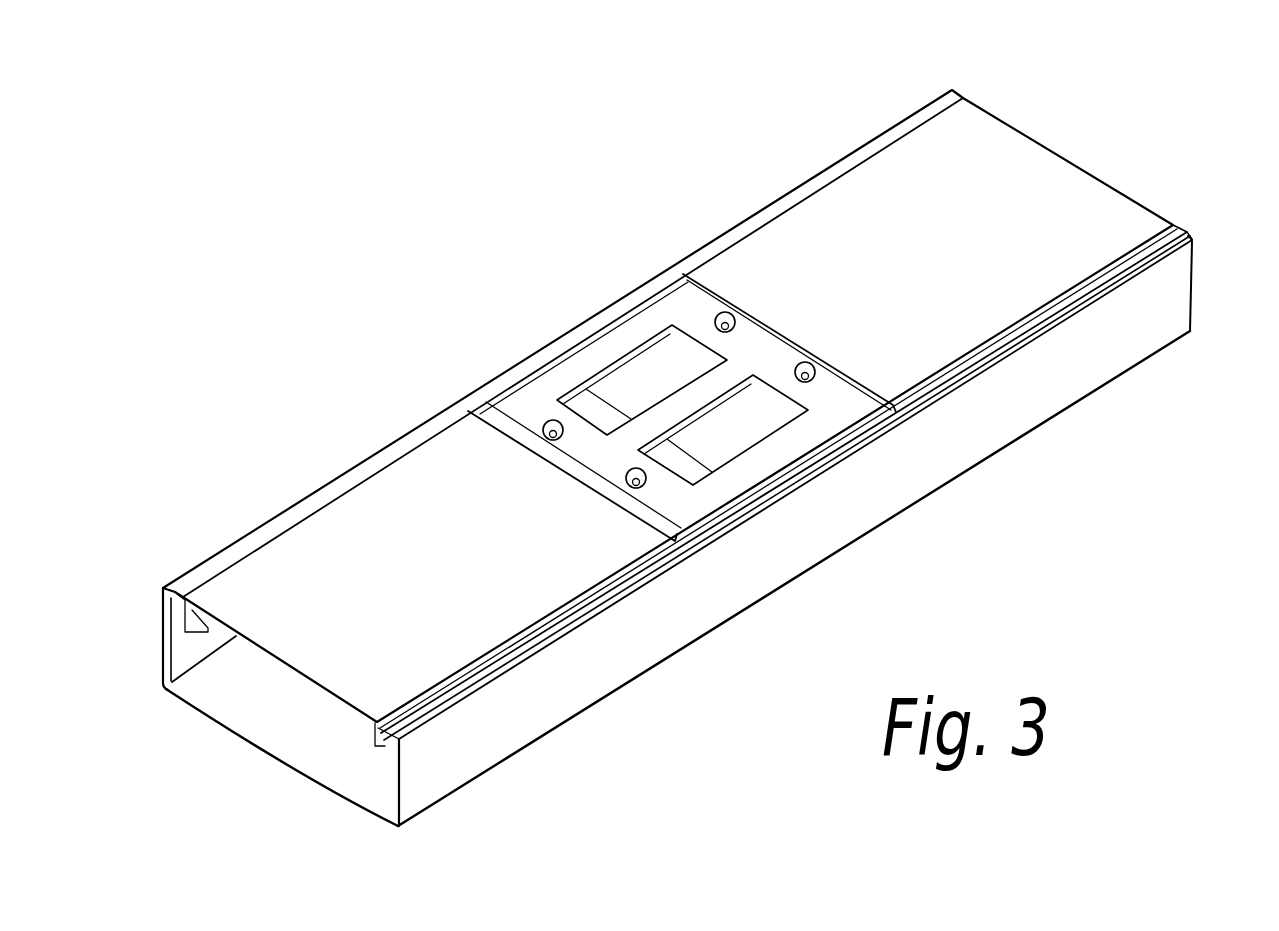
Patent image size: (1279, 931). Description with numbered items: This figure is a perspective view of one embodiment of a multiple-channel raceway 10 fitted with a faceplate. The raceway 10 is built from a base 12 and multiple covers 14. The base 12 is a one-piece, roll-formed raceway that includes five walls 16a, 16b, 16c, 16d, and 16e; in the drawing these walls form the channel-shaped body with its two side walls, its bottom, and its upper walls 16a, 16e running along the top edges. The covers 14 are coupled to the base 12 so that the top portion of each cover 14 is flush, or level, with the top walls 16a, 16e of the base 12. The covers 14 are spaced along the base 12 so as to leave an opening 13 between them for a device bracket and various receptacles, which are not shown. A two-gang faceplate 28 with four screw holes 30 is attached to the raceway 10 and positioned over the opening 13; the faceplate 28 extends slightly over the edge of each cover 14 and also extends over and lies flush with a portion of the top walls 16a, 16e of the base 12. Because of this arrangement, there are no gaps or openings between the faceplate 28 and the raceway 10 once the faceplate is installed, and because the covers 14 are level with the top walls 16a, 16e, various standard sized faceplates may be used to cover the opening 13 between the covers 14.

The multiple-channel raceway 10 is at (768, 139).
The base 12 is at (553, 724).
The opening 13 is at (665, 352).
The cover 14 is at (1008, 136).
The wall 16a is at (1188, 232).
The wall 16b is at (948, 437).
The wall 16c is at (295, 768).
The wall 16d is at (162, 644).
The wall 16e is at (918, 112).
The two-gang faceplate 28 is at (595, 347).
The screw holes 30 is at (540, 437).